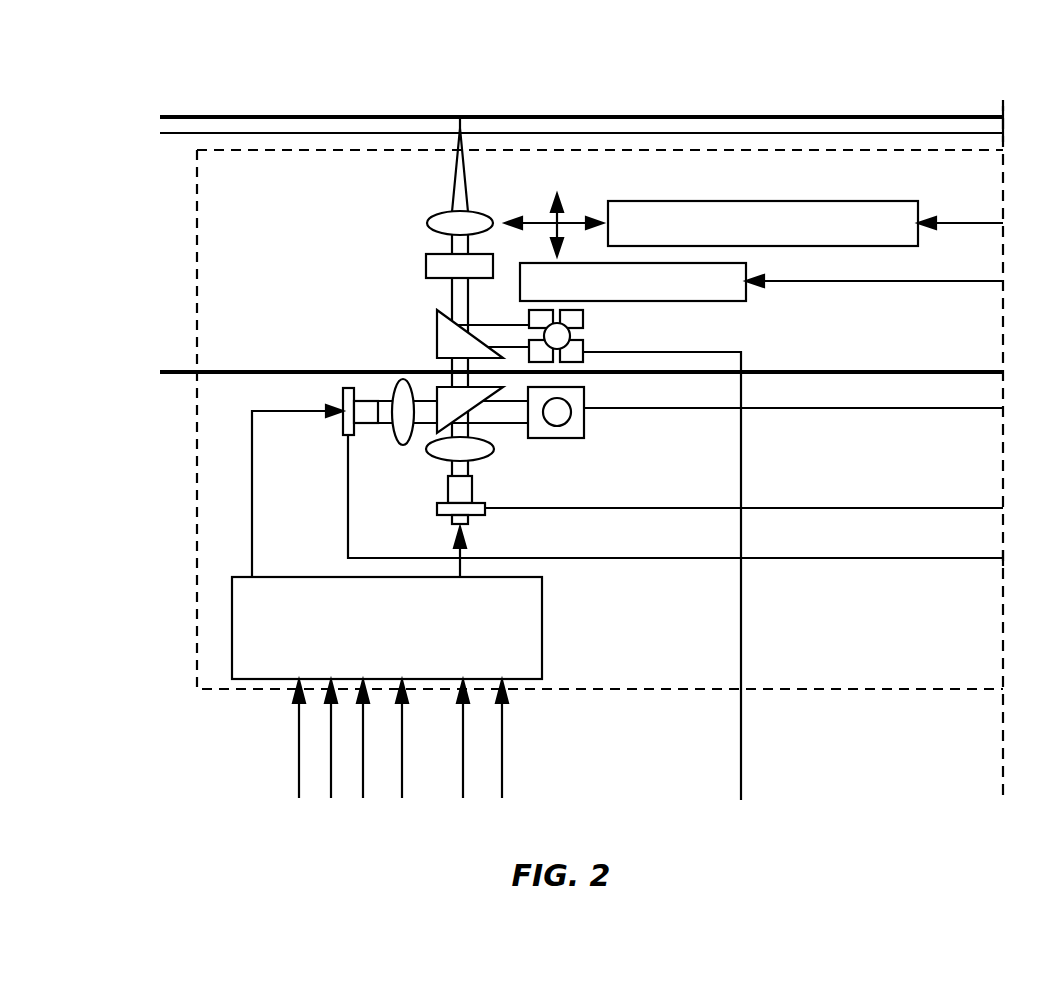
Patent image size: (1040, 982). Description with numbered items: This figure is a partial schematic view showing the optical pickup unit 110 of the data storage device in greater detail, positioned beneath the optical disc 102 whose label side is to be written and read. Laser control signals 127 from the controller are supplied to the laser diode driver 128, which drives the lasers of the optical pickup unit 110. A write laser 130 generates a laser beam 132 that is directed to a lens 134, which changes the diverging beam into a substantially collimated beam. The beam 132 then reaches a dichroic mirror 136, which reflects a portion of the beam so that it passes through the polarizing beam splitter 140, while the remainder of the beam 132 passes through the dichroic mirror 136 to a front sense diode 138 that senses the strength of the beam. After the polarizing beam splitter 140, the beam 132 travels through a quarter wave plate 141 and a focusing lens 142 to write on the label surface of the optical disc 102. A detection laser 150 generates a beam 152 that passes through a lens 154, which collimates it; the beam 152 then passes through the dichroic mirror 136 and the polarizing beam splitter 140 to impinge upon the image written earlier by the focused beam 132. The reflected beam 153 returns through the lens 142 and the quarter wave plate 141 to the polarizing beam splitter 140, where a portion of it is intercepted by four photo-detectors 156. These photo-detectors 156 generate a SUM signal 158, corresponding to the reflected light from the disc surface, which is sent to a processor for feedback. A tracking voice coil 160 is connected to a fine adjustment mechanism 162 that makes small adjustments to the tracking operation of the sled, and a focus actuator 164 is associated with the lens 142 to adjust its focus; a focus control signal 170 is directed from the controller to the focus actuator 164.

The optical disc 102 is at (623, 117).
The optical pickup unit 110 is at (283, 148).
The laser control signals 127 is at (528, 747).
The laser diode driver 128 is at (542, 643).
The write laser 130 is at (342, 388).
The laser beam 132 is at (368, 424).
The lens 134 is at (403, 446).
The dichroic mirror 136 is at (437, 386).
The front sense diode 138 is at (584, 427).
The polarizing beam splitter 140 is at (437, 328).
The quarter wave plate 141 is at (426, 262).
The focusing lens 142 is at (427, 221).
The detection laser 150 is at (486, 516).
The beam 152 is at (472, 470).
The reflected beam 153 is at (477, 325).
The lens 154 is at (493, 452).
The photo-detectors 156 is at (604, 320).
The SUM signal 158 is at (741, 492).
The tracking voice coil 160 is at (807, 201).
The fine adjustment mechanism 162 is at (576, 196).
The focus actuator 164 is at (746, 266).
The focus control signal 170 is at (882, 281).